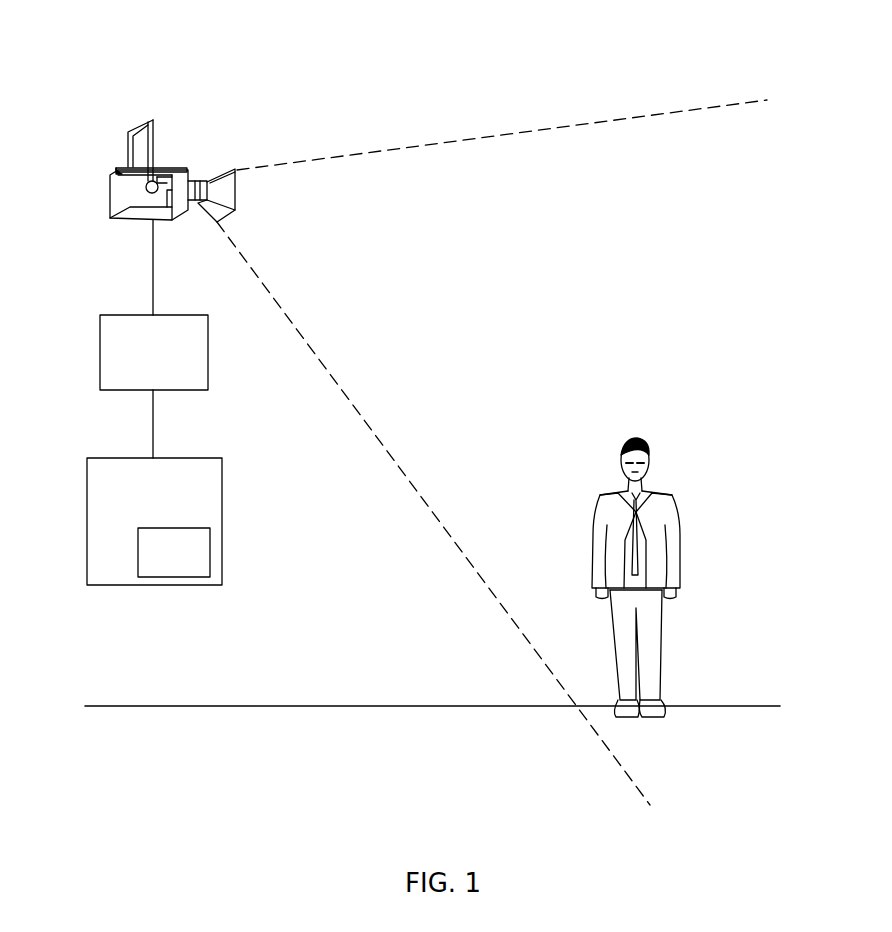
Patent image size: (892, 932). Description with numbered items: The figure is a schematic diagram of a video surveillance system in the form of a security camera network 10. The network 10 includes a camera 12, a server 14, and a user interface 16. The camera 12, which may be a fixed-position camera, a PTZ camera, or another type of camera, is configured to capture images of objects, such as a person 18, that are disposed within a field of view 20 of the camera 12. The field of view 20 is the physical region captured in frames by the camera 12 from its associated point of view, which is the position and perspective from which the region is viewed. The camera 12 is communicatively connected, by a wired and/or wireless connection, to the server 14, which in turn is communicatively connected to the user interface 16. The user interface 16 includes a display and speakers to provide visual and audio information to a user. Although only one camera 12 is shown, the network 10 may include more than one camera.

The security camera network 10 is at (655, 66).
The camera 12 is at (184, 166).
The server 14 is at (208, 352).
The user interface 16 is at (187, 457).
The person 18 is at (673, 505).
The field of view 20 is at (435, 514).